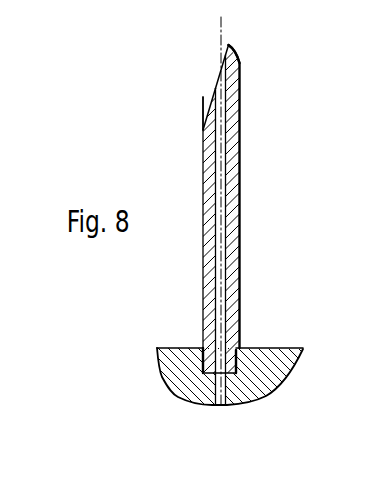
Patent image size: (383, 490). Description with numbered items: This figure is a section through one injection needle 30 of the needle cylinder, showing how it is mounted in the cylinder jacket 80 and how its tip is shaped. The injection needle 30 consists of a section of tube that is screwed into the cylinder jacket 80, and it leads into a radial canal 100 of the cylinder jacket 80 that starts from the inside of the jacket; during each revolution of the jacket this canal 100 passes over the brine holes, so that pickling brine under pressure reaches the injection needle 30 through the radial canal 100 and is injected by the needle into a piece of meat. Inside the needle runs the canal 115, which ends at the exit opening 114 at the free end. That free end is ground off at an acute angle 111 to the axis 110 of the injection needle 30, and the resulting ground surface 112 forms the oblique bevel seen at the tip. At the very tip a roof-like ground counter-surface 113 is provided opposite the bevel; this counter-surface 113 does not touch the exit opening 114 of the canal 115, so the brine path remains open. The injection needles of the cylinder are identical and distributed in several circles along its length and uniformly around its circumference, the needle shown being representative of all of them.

The injection needle 30 is at (241, 140).
The cylinder jacket 80 is at (175, 357).
The radial canal 100 is at (226, 383).
The axis 110 is at (222, 32).
The acute angle 111 is at (202, 97).
The ground surface 112 is at (205, 112).
The roof-like ground counter-surface 113 is at (235, 50).
The exit opening 114 is at (217, 94).
The canal 115 is at (226, 205).